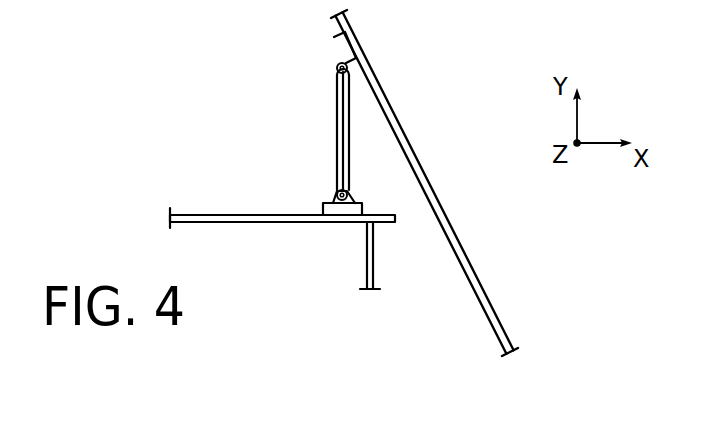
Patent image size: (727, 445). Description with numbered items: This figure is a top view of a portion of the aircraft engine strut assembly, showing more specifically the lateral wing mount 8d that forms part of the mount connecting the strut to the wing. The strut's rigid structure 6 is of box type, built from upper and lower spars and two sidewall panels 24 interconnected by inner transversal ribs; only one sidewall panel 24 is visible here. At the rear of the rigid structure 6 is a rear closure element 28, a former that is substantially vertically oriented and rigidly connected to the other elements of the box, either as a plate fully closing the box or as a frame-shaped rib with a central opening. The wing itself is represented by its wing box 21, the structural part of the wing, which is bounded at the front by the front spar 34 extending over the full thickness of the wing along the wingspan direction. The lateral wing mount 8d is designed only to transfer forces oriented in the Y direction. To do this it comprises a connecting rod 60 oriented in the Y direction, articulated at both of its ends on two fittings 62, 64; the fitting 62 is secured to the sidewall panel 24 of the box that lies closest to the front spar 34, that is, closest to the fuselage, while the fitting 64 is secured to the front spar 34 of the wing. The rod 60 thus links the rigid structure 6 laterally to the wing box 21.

The rigid structure 6 is at (152, 185).
The lateral wing mount 8d is at (318, 120).
The wing box 21 is at (505, 238).
The sidewall panel 24 is at (248, 222).
The rear closure element 28 is at (367, 258).
The front spar 34 is at (499, 317).
The connecting rod 60 is at (350, 128).
The fitting 62 is at (336, 208).
The fitting 64 is at (357, 49).